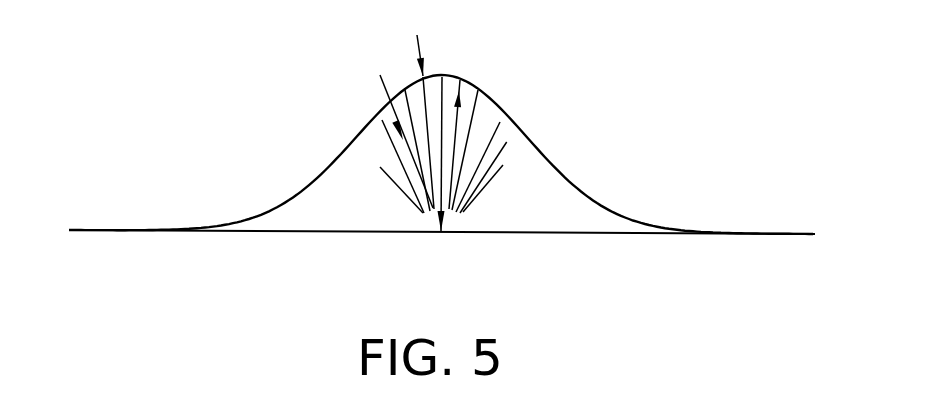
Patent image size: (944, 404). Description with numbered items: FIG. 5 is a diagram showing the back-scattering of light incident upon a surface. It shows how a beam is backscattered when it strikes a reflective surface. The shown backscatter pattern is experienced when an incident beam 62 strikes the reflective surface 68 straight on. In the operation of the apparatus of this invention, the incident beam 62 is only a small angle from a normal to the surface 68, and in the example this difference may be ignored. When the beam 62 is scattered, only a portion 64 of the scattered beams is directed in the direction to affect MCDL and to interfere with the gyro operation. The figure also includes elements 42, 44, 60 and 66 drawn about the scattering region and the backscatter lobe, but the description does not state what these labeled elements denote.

The light ray 42 is at (380, 168).
The light ray 44 is at (383, 150).
The incident light ray 60 is at (394, 128).
The incident beam 62 is at (423, 76).
The portion of the scattered beams 64 is at (461, 92).
The lens surface 66 is at (585, 192).
The reflective surface 68 is at (549, 233).